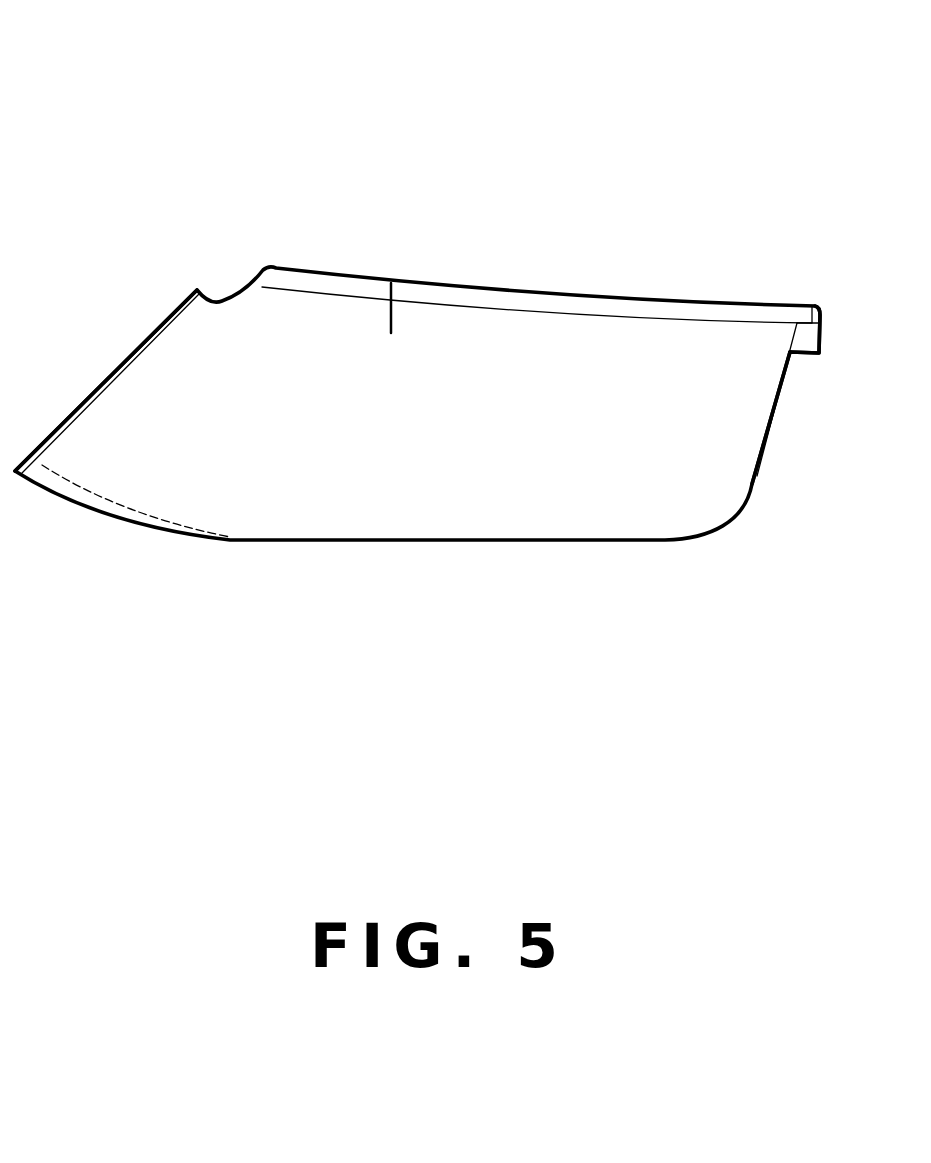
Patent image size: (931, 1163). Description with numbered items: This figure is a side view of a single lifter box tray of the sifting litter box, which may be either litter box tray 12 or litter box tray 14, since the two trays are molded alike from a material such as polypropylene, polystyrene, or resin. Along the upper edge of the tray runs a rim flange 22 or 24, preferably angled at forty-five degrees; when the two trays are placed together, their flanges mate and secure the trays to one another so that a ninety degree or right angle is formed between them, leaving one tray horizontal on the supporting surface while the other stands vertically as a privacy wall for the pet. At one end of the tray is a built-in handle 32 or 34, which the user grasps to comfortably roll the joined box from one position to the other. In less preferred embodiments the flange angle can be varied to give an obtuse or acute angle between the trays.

The litter box tray 12 is at (421, 287).
The litter box tray 14 is at (828, 82).
The rim flange 22 is at (146, 292).
The rim flange 24 is at (143, 338).
The built-in handle 32 is at (712, 509).
The built-in handle 34 is at (808, 358).